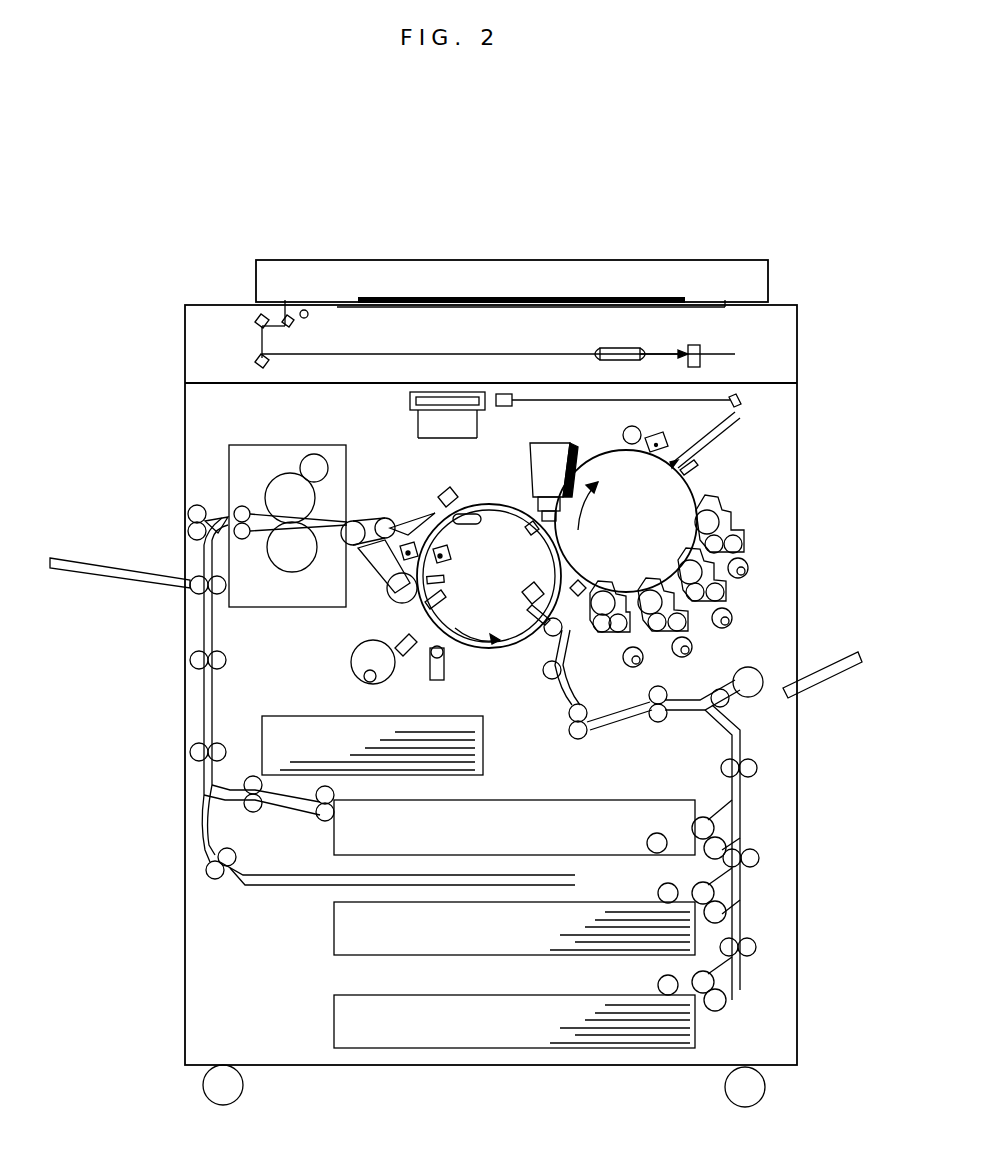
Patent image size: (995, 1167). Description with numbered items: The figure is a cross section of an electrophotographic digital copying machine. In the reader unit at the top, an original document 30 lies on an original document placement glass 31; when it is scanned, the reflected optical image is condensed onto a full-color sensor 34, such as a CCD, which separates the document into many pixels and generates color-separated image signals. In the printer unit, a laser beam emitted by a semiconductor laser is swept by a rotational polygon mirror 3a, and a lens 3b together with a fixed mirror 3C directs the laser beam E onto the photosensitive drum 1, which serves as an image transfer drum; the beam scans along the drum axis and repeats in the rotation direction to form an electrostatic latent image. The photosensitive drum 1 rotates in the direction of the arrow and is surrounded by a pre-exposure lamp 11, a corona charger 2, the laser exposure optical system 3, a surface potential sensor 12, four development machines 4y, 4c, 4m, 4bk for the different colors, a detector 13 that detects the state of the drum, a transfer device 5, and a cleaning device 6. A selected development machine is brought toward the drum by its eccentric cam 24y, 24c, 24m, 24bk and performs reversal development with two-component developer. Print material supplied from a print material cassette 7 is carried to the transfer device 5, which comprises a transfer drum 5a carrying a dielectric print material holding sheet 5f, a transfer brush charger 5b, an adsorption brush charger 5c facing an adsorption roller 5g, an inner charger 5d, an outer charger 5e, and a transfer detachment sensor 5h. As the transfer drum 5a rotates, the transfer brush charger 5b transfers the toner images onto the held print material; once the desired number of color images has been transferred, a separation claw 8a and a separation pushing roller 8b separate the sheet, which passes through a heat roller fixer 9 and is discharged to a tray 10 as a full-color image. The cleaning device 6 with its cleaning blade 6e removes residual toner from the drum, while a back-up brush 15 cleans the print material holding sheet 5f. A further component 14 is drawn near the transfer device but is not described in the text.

The photosensitive drum 1 is at (690, 490).
The corona charger 2 is at (668, 445).
The laser exposure optical system 3 is at (460, 395).
The rotational polygon mirror 3a is at (432, 395).
The lens 3b is at (504, 395).
The fixed mirror 3C is at (740, 402).
The development machine 4y is at (745, 532).
The development machine 4c is at (730, 590).
The development machine 4m is at (690, 628).
The development machine 4bk is at (612, 640).
The transfer device 5 is at (489, 576).
The transfer drum 5a is at (535, 497).
The transfer brush charger 5b is at (528, 598).
The adsorption brush charger 5c is at (520, 640).
The inner charger 5d is at (470, 525).
The outer charger 5e is at (392, 524).
The print material holding sheet 5f is at (470, 505).
The adsorption roller 5g is at (562, 665).
The transfer detachment sensor 5h is at (445, 490).
The cleaning device 6 is at (540, 440).
The cleaning blade 6e is at (555, 532).
The print material cassette 7 is at (310, 720).
The separation claw 8a is at (410, 545).
The separation pushing roller 8b is at (510, 525).
The heat roller fixer 9 is at (230, 460).
The tray 10 is at (135, 572).
The pre-exposure lamp 11 is at (632, 426).
The surface potential sensor 12 is at (694, 465).
The detector 13 is at (578, 615).
The cleaning unit 14 is at (370, 612).
The back-up brush 15 is at (477, 600).
The eccentric cam 24y is at (750, 568).
The eccentric cam 24c is at (733, 618).
The eccentric cam 24m is at (694, 648).
The eccentric cam 24bk is at (643, 660).
The original document 30 is at (345, 302).
The original document placement glass 31 is at (312, 300).
The full-color sensor 34 is at (702, 352).
The laser beam E is at (705, 440).